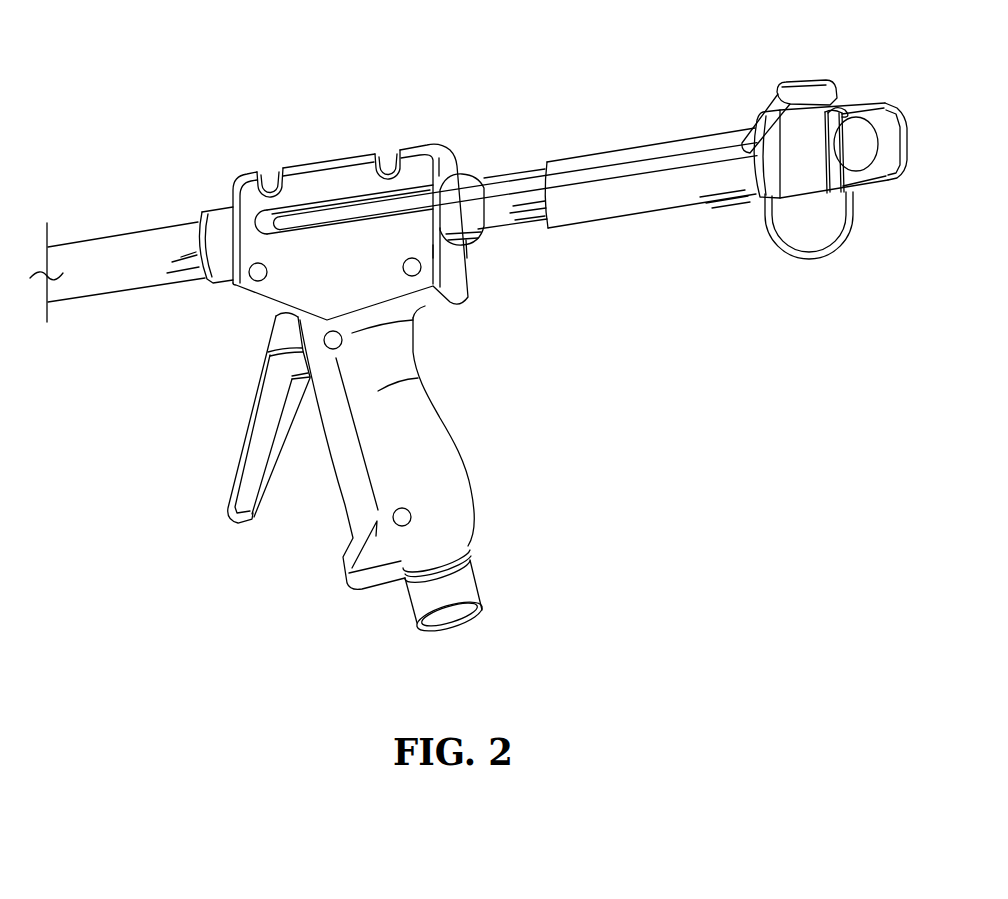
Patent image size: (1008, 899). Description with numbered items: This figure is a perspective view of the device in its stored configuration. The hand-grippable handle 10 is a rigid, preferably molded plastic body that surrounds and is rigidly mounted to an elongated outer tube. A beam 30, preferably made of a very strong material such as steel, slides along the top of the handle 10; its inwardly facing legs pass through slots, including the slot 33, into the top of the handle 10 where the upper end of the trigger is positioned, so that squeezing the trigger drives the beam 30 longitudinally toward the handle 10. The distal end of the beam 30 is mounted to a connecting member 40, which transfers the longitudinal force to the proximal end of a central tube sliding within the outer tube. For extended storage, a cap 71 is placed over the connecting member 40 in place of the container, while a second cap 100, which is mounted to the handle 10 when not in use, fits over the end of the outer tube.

The handle 10 is at (490, 482).
The beam 30 is at (557, 180).
The slot 33 is at (298, 221).
The connecting member 40 is at (635, 200).
The cap 71 is at (855, 133).
The cap 100 is at (492, 591).